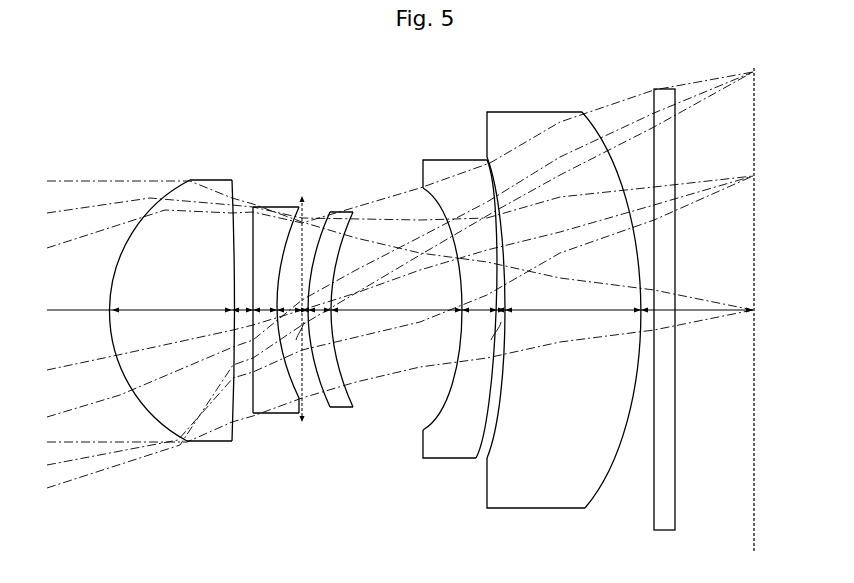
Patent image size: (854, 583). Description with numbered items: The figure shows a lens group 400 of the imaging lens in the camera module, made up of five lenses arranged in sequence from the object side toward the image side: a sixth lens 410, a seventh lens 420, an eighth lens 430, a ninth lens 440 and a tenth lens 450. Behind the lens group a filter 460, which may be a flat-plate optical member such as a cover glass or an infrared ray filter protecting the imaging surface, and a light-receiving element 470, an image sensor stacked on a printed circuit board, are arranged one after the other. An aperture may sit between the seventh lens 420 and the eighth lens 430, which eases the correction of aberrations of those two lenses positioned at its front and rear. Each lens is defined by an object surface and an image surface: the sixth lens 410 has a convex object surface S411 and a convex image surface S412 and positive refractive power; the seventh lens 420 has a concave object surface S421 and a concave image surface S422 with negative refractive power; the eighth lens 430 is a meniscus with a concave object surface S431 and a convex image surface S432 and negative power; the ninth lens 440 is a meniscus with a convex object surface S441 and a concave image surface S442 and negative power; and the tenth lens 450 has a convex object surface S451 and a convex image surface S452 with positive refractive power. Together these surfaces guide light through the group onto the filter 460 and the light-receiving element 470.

The first lens group 400 is at (100, 126).
The sixth lens 410 is at (174, 311).
The seventh lens 420 is at (269, 310).
The eighth lens 430 is at (345, 309).
The ninth lens 440 is at (459, 316).
The tenth lens 450 is at (564, 312).
The filter 460 is at (664, 531).
The light-receiving element 470 is at (756, 531).
The object surface of the sixth lens S411 is at (148, 200).
The image surface of the sixth lens S412 is at (232, 192).
The object surface of the seventh lens S421 is at (252, 218).
The image surface of the seventh lens S422 is at (289, 233).
The object surface of the eighth lens S431 is at (339, 210).
The image surface of the eighth lens S432 is at (353, 212).
The object surface of the ninth lens S441 is at (438, 185).
The image surface of the ninth lens S442 is at (486, 165).
The object surface of the tenth lens S451 is at (505, 165).
The image surface of the tenth lens S452 is at (600, 137).